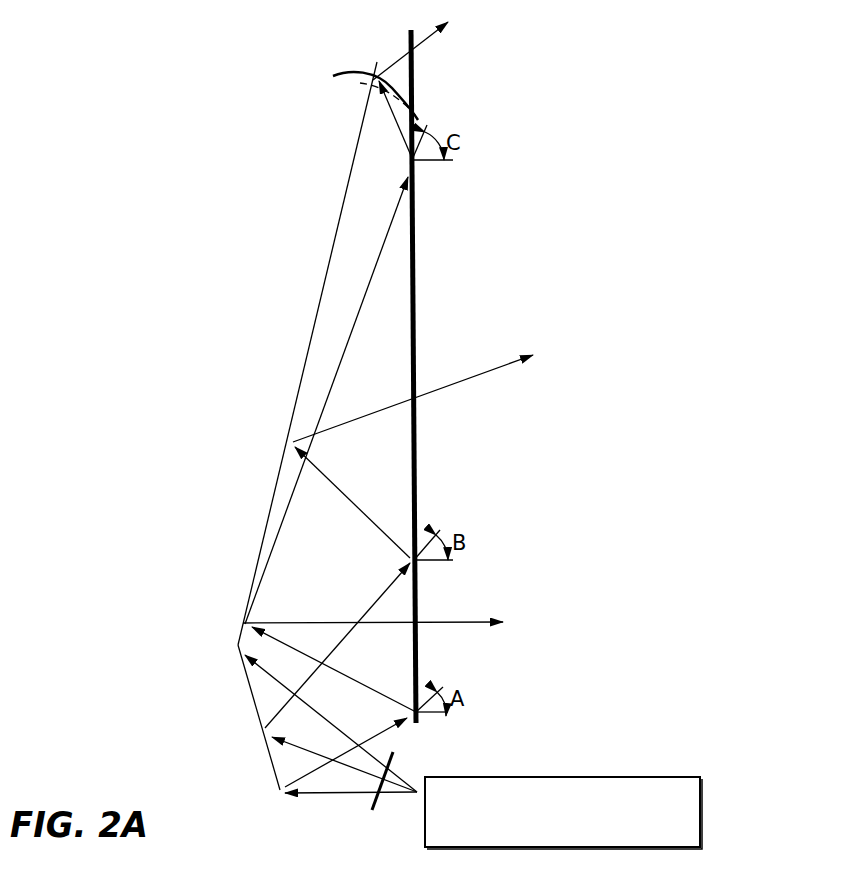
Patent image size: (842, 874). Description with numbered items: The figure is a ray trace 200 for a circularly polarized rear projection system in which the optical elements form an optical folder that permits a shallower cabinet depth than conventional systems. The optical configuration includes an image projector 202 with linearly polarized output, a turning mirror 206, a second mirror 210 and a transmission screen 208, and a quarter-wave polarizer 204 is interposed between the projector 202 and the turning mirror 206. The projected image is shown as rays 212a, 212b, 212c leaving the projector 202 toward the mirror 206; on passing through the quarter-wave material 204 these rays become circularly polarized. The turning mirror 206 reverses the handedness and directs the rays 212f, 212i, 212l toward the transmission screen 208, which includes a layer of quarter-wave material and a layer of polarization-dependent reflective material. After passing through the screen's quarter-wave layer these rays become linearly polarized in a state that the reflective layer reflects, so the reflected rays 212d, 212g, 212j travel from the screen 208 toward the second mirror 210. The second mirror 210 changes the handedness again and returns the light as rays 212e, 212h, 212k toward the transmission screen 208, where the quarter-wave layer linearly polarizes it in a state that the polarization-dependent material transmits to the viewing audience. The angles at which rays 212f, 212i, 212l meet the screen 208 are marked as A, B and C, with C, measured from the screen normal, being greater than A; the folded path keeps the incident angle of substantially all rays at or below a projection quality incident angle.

The ray trace 200 is at (290, 138).
The image projector 202 is at (617, 777).
The quarter-wave polarizer 204 is at (377, 805).
The turning mirror 206 is at (267, 757).
The transmission screen 208 is at (415, 96).
The second mirror 210 is at (316, 313).
The projection image ray 212a is at (330, 795).
The projection image ray 212b is at (357, 767).
The projection image ray 212c is at (263, 671).
The projection image ray 212d is at (377, 690).
The projection image ray 212e is at (457, 621).
The projection image ray 212f is at (377, 602).
The projection image ray 212g is at (340, 493).
The projection image ray 212h is at (370, 413).
The projection image ray 212i is at (388, 233).
The projection image ray 212j is at (395, 127).
The projection image ray 212k is at (415, 45).
The projection image ray 212l is at (383, 737).